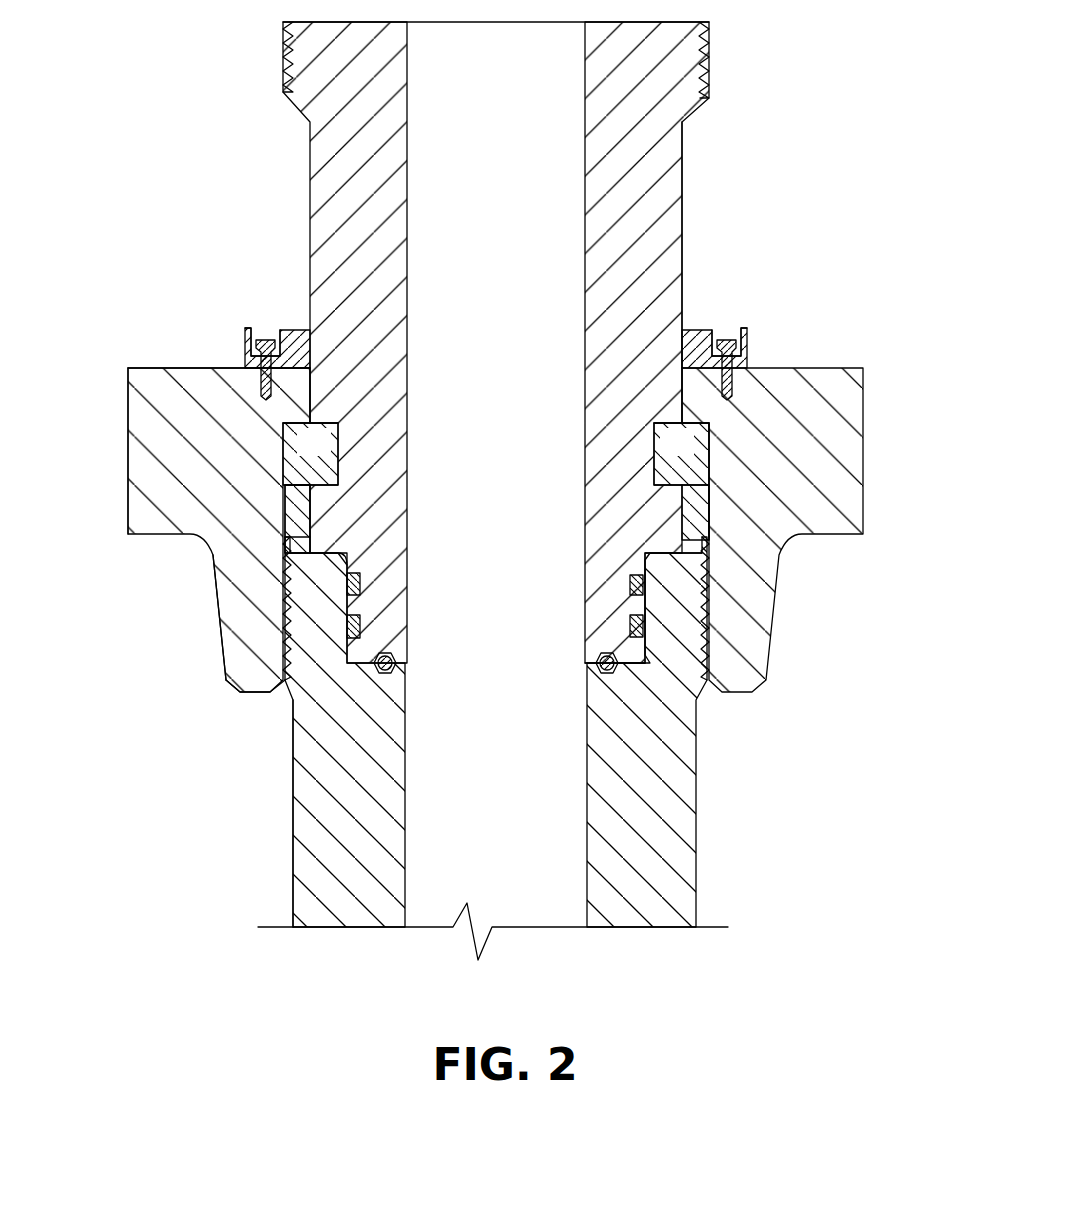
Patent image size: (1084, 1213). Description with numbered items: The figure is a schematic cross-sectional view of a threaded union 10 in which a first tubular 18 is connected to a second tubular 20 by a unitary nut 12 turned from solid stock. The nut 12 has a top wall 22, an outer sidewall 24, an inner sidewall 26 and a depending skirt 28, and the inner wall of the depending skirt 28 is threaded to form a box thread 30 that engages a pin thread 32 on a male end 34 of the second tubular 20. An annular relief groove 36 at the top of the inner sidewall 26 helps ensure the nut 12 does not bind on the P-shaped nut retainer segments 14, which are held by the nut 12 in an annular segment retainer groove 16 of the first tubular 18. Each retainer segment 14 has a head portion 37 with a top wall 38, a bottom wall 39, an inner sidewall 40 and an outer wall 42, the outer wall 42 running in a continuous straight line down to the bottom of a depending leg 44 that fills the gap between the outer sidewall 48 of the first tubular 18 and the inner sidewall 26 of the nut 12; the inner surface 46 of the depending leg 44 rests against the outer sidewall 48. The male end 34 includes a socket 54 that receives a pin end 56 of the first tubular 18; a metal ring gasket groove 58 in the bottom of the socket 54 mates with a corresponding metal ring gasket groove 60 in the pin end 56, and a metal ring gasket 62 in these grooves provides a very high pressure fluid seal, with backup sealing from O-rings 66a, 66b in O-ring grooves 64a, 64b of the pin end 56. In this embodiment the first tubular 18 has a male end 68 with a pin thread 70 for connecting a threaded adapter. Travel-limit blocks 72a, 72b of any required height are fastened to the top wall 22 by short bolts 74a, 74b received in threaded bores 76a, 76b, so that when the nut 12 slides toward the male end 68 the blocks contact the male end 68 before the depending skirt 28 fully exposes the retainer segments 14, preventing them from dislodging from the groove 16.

The threaded union 10 is at (778, 292).
The unitary nut 12 is at (822, 368).
The nut retainer segments 14 is at (640, 450).
The annular segment retainer groove 16 is at (280, 470).
The first tubular 18 is at (660, 258).
The second tubular 20 is at (680, 780).
The top wall 22 is at (192, 368).
The outer sidewall 24 is at (128, 455).
The inner sidewall 26 is at (720, 505).
The depending skirt 28 is at (235, 570).
The box thread 30 is at (280, 597).
The pin thread 32 is at (287, 645).
The male end 34 is at (295, 695).
The annular relief groove 36 is at (128, 367).
The head portion 37 is at (333, 458).
The top wall 38 is at (313, 372).
The bottom wall 39 is at (710, 525).
The inner sidewall 40 is at (320, 422).
The outer wall 42 is at (705, 462).
The depending leg 44 is at (308, 530).
The inner surface 46 is at (300, 505).
The outer sidewall 48 is at (318, 555).
The socket 54 is at (650, 645).
The pin end 56 is at (360, 655).
The metal ring gasket groove 58 is at (595, 668).
The metal ring gasket groove 60 is at (612, 655).
The metal ring gasket 62 is at (378, 670).
The O-ring groove 64a is at (630, 583).
The O-ring groove 64b is at (360, 625).
The O-ring 66a is at (360, 583).
The O-ring 66b is at (630, 625).
The male end 68 is at (633, 110).
The pin thread 70 is at (707, 62).
The travel-limit block 72a is at (293, 330).
The travel-limit block 72b is at (700, 330).
The short bolt 74a is at (253, 345).
The short bolt 74b is at (740, 348).
The threaded bore 76a is at (268, 360).
The threaded bore 76b is at (720, 380).